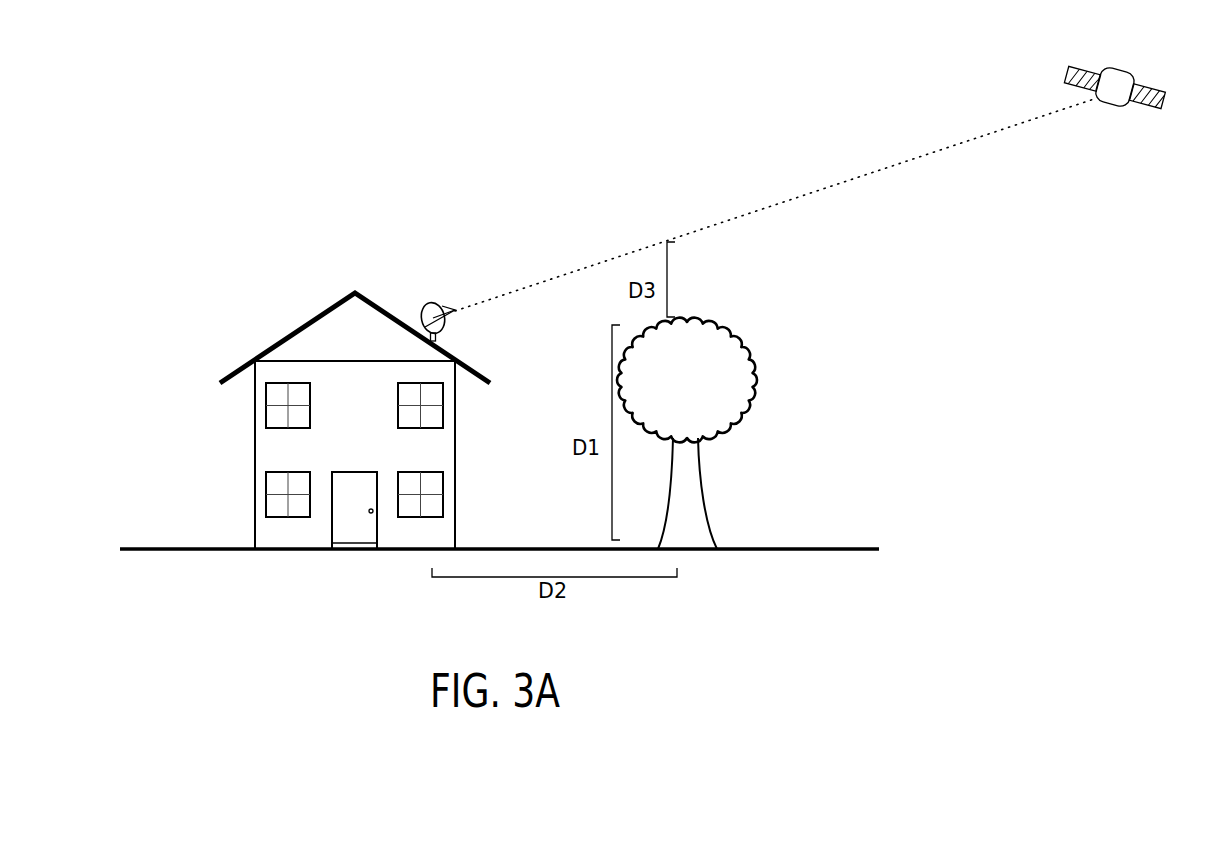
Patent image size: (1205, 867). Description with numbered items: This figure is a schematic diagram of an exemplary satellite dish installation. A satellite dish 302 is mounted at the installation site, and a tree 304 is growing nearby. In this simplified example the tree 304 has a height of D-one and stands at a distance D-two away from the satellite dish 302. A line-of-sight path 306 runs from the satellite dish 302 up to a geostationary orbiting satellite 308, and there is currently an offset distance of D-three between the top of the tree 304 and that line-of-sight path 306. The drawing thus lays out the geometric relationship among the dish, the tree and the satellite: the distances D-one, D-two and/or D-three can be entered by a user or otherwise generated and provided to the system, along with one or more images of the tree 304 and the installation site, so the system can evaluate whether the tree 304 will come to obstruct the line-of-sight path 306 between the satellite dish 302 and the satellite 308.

The satellite dish 302 is at (433, 304).
The tree 304 is at (738, 330).
The line-of-sight path 306 is at (912, 163).
The geostationary orbiting satellite 308 is at (1122, 70).